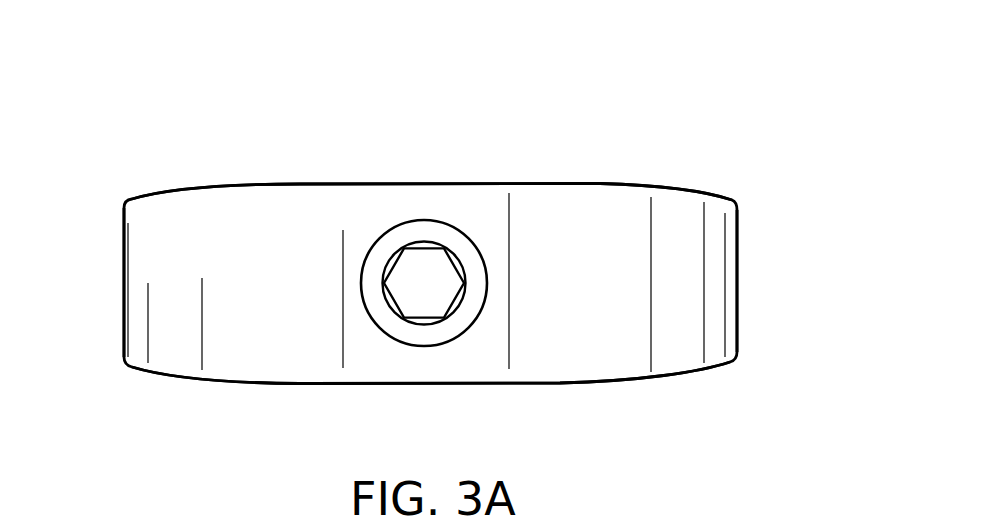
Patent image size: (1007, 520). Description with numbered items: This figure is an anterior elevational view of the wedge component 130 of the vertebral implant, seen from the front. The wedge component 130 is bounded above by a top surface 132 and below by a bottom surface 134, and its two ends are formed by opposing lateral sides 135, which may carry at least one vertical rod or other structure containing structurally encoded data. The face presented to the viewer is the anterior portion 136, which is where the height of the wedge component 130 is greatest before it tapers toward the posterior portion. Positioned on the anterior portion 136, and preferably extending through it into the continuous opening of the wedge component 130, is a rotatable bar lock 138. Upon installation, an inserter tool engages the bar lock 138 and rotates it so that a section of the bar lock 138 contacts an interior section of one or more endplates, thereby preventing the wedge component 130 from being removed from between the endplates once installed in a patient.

The wedge component 130 is at (480, 183).
The top surface 132 is at (617, 182).
The bottom surface 134 is at (643, 380).
The opposing lateral sides 135 is at (122, 297).
The anterior portion 136 is at (296, 291).
The bar lock 138 is at (382, 240).